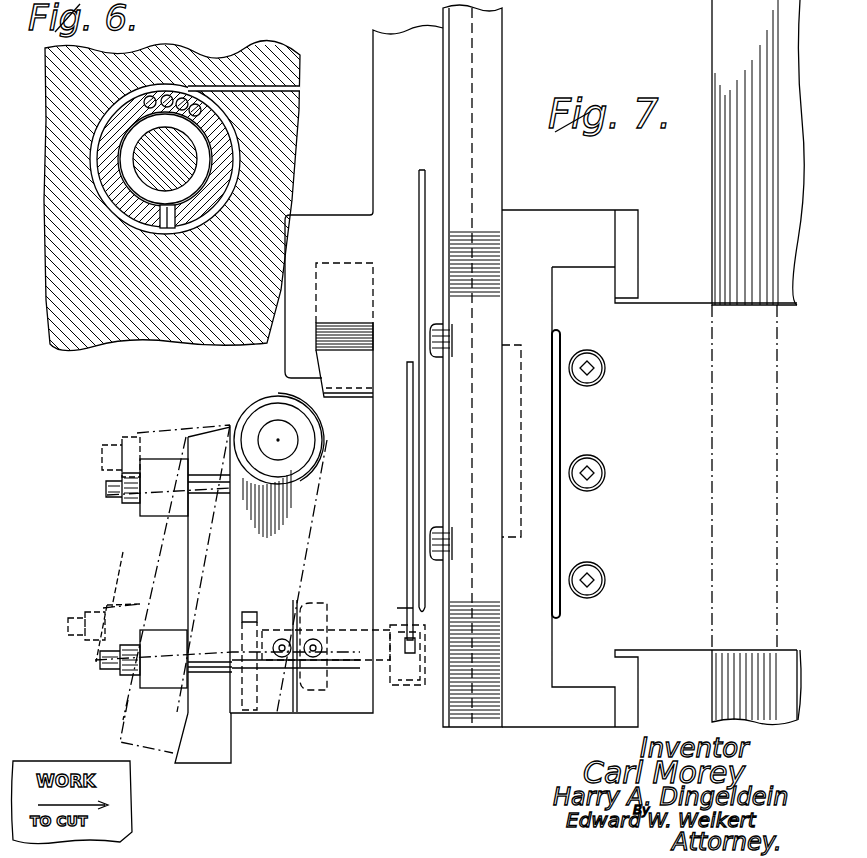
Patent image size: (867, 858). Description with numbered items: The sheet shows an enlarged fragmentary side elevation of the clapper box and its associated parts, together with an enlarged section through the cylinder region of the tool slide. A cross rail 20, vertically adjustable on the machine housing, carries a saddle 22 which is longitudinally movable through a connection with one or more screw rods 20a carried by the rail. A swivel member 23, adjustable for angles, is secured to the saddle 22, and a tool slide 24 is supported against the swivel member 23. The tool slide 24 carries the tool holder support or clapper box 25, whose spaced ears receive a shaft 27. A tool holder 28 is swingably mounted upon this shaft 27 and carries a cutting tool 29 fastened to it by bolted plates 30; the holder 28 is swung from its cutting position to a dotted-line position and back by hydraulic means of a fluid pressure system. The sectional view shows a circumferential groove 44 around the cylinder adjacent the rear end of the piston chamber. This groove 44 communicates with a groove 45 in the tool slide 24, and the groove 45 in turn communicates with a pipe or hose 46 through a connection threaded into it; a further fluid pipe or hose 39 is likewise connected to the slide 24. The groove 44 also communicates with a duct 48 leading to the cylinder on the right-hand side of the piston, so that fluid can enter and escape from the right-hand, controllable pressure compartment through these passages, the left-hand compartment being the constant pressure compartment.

In FIG. 7, the cross rail 20 is at (658, 318).
In FIG. 7, the screw rods 20a is at (597, 460).
In FIG. 7, the saddle 22 is at (570, 218).
In FIG. 7, the swivel member 23 is at (472, 72).
In FIG. 6, the tool slide 24 is at (115, 333).
In FIG. 7, the tool slide 24 is at (385, 115).
In FIG. 7, the clapper box 25 is at (312, 400).
In FIG. 7, the shaft 27 is at (268, 432).
In FIG. 7, the tool holder 28 is at (310, 705).
In FIG. 7, the cutting tool 29 is at (133, 735).
In FIG. 7, the bolted plates 30 is at (148, 633).
In FIG. 7, the fluid pipe or hose 39 is at (410, 548).
In FIG. 6, the circumferential groove 44 is at (182, 88).
In FIG. 6, the groove 45 is at (265, 88).
In FIG. 7, the pipe or hose 46 is at (422, 505).
In FIG. 6, the duct 48 is at (168, 220).